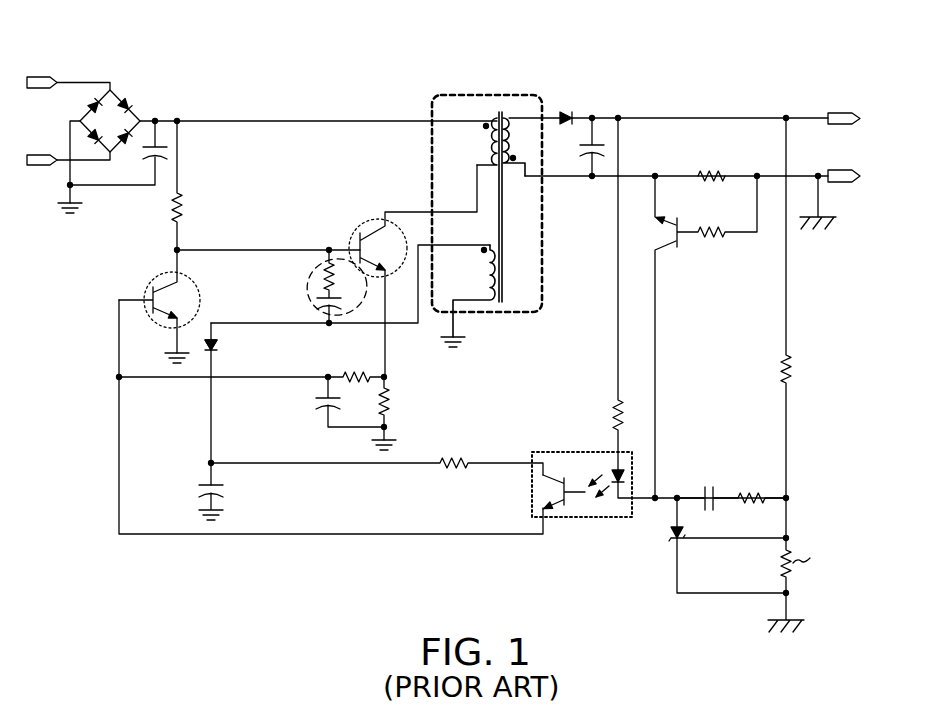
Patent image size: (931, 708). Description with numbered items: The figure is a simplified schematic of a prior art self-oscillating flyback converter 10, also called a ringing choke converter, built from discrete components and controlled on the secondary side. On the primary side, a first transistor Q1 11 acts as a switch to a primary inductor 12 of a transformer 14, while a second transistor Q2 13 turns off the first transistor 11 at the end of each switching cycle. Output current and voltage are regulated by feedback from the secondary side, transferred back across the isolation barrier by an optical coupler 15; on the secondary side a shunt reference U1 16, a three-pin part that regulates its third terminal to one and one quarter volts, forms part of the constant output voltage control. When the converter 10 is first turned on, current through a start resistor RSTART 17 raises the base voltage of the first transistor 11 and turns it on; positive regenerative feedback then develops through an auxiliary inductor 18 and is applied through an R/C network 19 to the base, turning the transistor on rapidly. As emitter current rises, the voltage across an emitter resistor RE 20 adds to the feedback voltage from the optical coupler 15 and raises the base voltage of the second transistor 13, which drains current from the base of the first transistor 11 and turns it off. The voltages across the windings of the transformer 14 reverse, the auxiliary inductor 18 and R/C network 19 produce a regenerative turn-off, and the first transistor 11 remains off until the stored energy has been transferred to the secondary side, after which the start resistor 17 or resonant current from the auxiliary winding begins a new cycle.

The self-oscillating flyback converter 10 is at (533, 49).
The first transistor Q1 11 is at (360, 232).
The primary inductor 12 is at (501, 138).
The second transistor Q2 13 is at (153, 278).
The transformer 14 is at (487, 204).
The optical coupler 15 is at (585, 451).
The shunt reference U1 16 is at (672, 531).
The start resistor RSTART 17 is at (187, 212).
The auxiliary inductor 18 is at (468, 285).
The R/C network 19 is at (313, 267).
The emitter resistor RE 20 is at (390, 403).